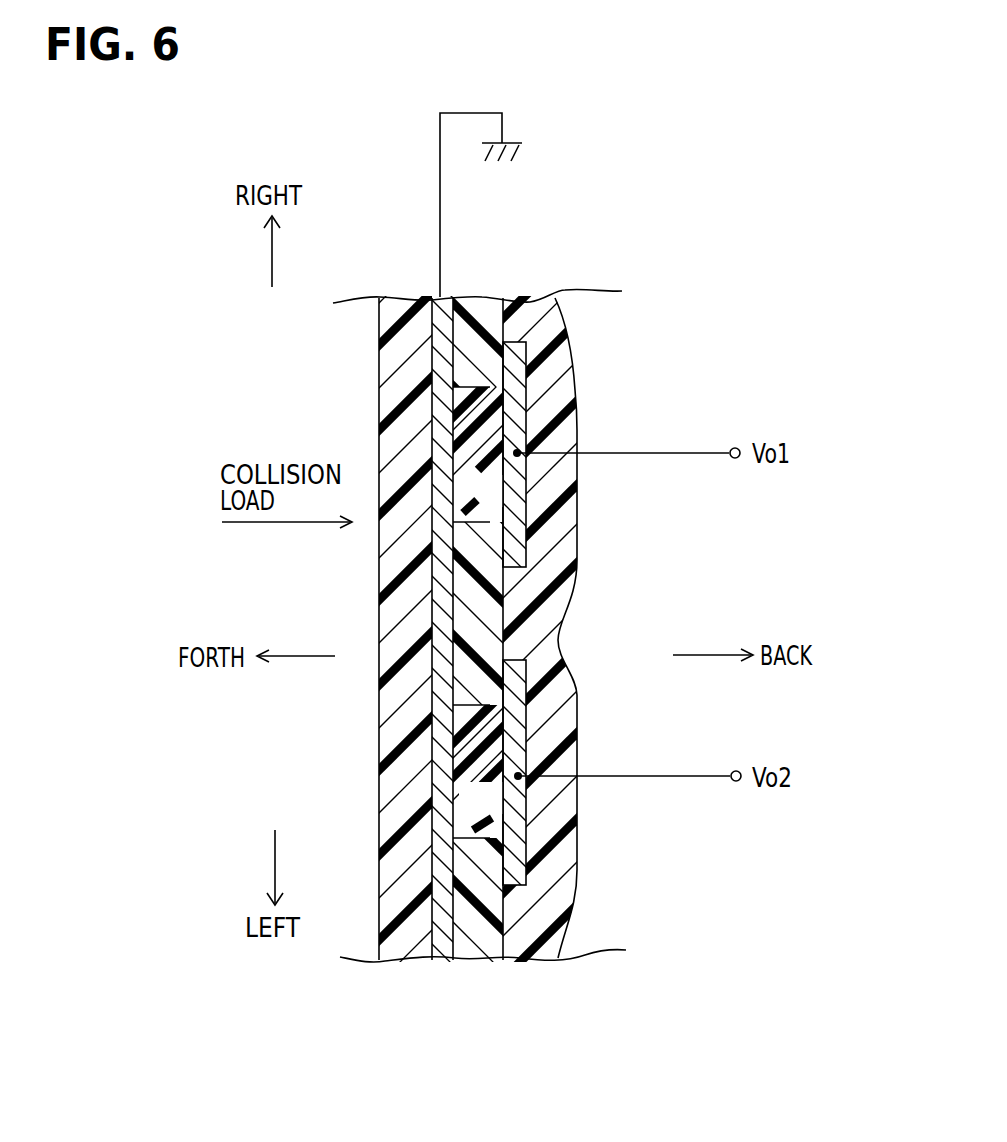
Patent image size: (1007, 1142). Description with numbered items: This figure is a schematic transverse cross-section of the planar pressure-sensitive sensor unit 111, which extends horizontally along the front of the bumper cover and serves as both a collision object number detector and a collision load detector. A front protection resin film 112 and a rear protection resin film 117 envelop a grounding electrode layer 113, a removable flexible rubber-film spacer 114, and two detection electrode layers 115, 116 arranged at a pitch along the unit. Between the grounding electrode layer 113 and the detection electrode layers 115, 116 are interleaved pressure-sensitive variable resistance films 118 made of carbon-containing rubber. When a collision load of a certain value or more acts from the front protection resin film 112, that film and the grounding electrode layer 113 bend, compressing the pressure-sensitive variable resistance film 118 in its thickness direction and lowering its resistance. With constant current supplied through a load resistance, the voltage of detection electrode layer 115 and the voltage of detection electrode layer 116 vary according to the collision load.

The planar pressure-sensitive sensor unit 111 is at (576, 268).
The front protection resin film 112 is at (398, 372).
The grounding electrode layer 113 is at (448, 945).
The flexible rubber-film spacer 114 is at (473, 932).
The detection electrode layer 115 is at (518, 390).
The detection electrode layer 116 is at (527, 712).
The rear protection resin film 117 is at (535, 927).
The pressure-sensitive variable resistance film 118 is at (478, 417).